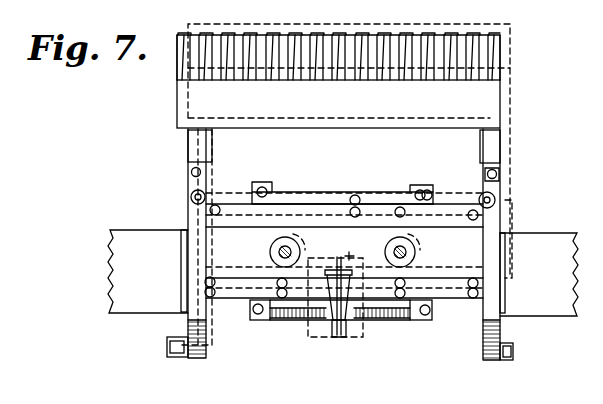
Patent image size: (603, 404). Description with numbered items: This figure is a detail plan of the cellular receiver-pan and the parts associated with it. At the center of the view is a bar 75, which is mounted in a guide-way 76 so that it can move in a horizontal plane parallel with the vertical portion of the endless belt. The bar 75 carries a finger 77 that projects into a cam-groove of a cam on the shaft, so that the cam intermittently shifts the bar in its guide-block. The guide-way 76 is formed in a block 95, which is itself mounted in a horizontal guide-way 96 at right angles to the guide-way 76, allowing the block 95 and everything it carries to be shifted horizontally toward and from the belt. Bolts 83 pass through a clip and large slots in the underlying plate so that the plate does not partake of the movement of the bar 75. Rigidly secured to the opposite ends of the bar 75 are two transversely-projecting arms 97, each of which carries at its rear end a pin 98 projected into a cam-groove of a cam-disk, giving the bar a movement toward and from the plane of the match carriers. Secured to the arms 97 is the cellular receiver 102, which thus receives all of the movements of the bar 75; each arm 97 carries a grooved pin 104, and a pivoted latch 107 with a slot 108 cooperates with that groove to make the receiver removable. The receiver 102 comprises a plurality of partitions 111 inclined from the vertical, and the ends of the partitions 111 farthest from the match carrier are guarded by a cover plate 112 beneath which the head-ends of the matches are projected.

The bar 75 is at (468, 262).
The guide-way 76 is at (440, 215).
The finger 77 is at (333, 292).
The bolts 83 is at (277, 250).
The block 95 is at (297, 200).
The horizontal guide-way 96 is at (262, 188).
The transversely-projecting arms 97 is at (193, 358).
The pin 98 is at (183, 358).
The cellular receiver 102 is at (372, 65).
The pin 104 is at (192, 172).
The pivoted latch 107 is at (188, 167).
The slot 108 is at (497, 175).
The partitions 111 is at (305, 47).
The cover plate 112 is at (324, 106).